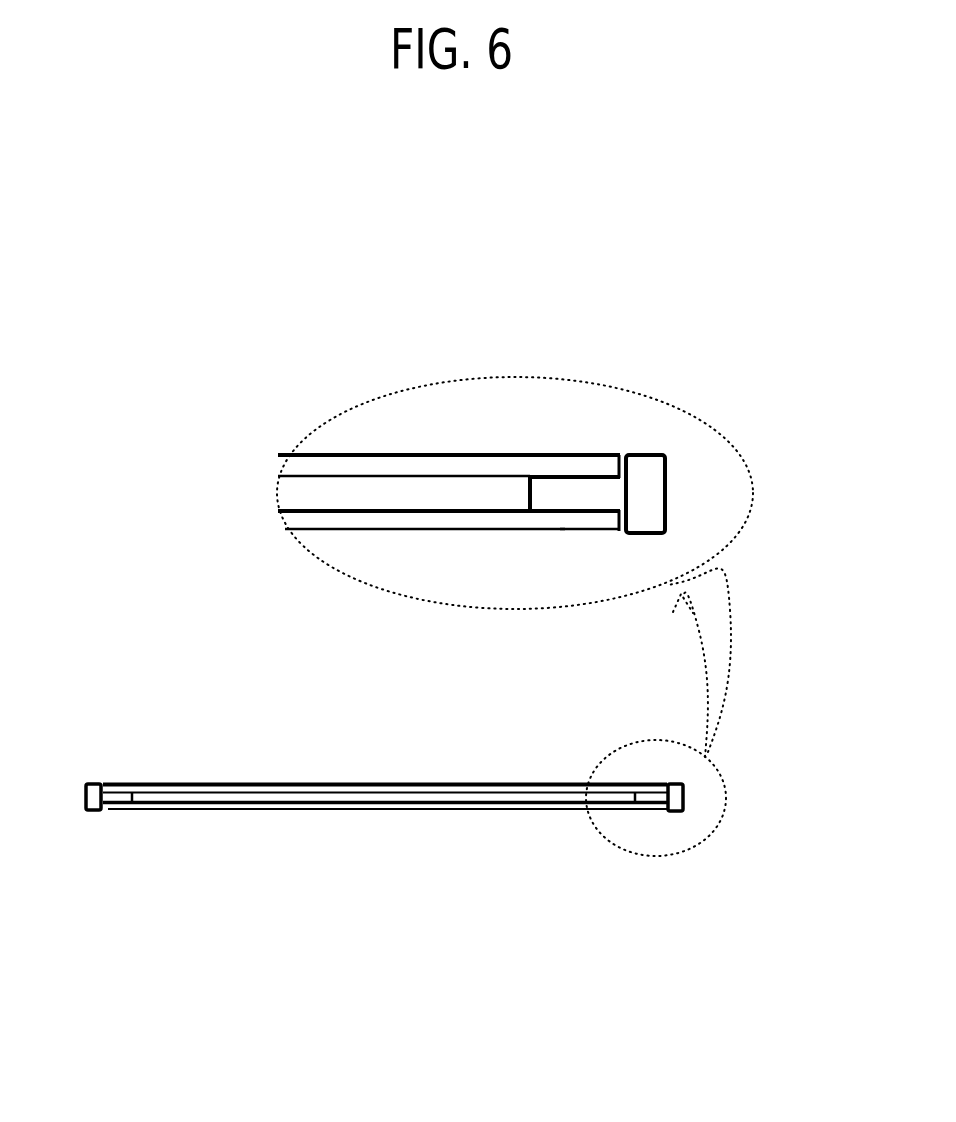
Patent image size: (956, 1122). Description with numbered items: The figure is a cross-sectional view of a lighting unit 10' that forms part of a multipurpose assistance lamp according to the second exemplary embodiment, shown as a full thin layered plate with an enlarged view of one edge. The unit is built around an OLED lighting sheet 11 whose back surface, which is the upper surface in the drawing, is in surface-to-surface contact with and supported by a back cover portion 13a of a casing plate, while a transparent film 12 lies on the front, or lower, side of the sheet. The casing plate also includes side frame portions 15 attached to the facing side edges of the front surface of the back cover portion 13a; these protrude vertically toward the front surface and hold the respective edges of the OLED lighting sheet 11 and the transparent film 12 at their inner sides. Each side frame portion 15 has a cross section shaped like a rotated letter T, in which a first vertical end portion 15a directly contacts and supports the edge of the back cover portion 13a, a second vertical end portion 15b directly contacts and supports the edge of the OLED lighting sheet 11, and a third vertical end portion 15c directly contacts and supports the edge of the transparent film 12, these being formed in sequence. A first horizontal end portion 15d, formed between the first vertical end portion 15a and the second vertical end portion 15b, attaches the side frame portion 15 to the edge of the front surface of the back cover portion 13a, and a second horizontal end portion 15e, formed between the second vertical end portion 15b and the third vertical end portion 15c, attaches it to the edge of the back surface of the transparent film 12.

The lighting unit 10' is at (384, 694).
The OLED lighting sheet 11 is at (335, 497).
The transparent film 12 is at (415, 520).
The back cover portion 13a is at (415, 453).
The side frame portion 15 is at (667, 482).
The first vertical end portion 15a is at (617, 456).
The second vertical end portion 15b is at (528, 508).
The third vertical end portion 15c is at (612, 530).
The first horizontal end portion 15d is at (570, 476).
The second horizontal end portion 15e is at (573, 512).